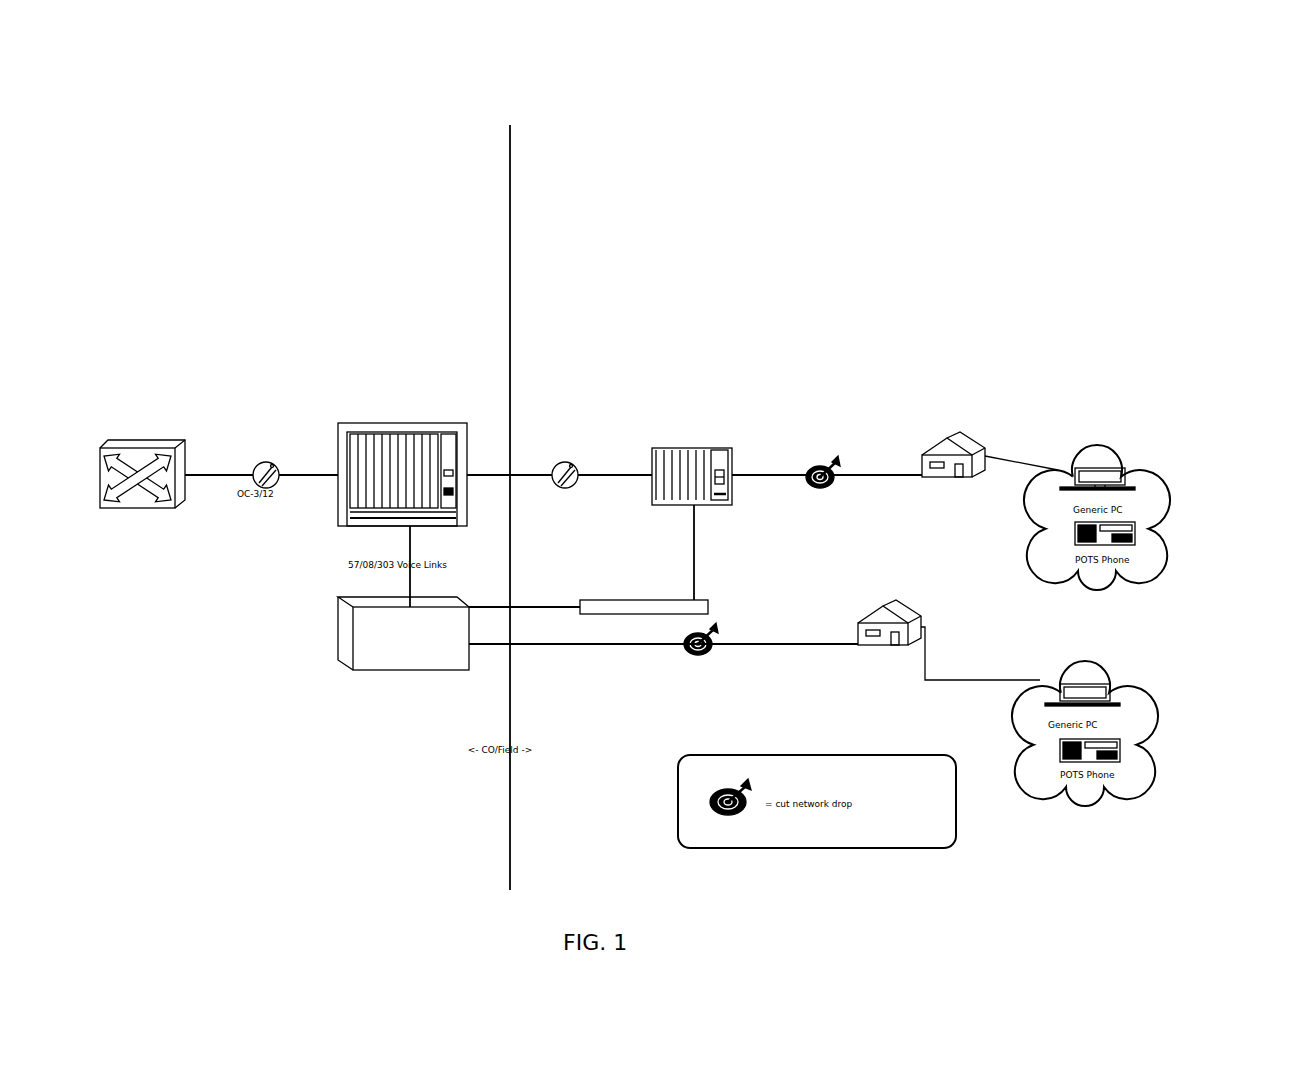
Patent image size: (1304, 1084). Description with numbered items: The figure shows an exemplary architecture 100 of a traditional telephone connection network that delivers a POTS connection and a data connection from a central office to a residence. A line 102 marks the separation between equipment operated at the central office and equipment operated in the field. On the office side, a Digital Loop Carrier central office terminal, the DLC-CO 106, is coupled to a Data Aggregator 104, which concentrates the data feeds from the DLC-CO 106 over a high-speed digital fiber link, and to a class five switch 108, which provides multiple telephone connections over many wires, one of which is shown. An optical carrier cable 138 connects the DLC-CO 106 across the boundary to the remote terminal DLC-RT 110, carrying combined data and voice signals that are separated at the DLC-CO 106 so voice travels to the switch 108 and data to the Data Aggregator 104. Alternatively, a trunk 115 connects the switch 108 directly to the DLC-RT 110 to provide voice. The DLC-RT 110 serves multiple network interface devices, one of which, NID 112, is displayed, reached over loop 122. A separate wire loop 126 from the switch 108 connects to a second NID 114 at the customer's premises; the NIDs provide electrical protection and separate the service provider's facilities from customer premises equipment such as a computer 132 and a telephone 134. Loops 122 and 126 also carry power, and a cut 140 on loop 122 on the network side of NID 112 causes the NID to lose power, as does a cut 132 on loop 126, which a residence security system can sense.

The architecture 100 is at (952, 184).
The line 102 is at (510, 247).
The Data Aggregator 104 is at (107, 428).
The Digital Loop Carrier central office equipment (DLC-CO) 106 is at (345, 425).
The Class 5 Switch 108 is at (357, 648).
The Digital Loop Carrier remote equipment (DLC-RT) 110 is at (718, 460).
The Network Interface Device (NID) 112 is at (952, 452).
The Network Interface Device (NID) 114 is at (892, 645).
The trunk 115 is at (537, 604).
The loop 122 is at (858, 475).
The wire loop 126 is at (613, 645).
The computer 132 is at (705, 636).
The telephone 134 is at (1133, 530).
The optical OC-3 carrier cable 138 is at (570, 462).
The cut 140 is at (830, 465).